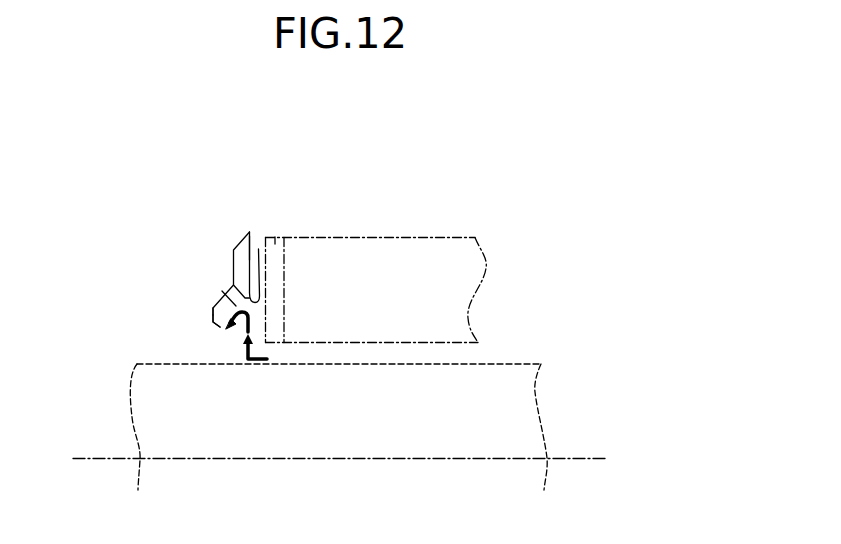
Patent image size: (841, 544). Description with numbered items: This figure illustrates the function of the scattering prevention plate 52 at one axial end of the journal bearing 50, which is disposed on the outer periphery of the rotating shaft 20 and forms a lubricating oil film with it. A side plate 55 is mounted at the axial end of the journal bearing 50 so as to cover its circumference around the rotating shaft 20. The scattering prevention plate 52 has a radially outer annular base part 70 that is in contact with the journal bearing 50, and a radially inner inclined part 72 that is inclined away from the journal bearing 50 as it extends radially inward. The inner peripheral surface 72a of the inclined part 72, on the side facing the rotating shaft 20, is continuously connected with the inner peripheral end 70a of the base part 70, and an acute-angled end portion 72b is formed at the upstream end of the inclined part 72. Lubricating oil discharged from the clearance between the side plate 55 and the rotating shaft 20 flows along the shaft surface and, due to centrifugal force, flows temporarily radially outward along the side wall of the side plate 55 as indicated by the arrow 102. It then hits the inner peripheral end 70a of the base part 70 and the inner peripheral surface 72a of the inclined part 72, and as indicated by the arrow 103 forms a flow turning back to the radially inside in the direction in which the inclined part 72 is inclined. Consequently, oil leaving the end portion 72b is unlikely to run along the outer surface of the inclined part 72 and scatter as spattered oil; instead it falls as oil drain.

The rotating shaft 20 is at (147, 400).
The journal bearing 50 is at (380, 242).
The scattering prevention plate 52 is at (127, 245).
The side plate 55 is at (277, 236).
The base part 70 is at (240, 255).
The inner peripheral end 70a is at (258, 249).
The inclined part 72 is at (212, 316).
The inner peripheral surface 72a is at (218, 324).
The acute-angled end portion 72b is at (214, 311).
The arrow 102 is at (258, 363).
The arrow 103 is at (236, 306).